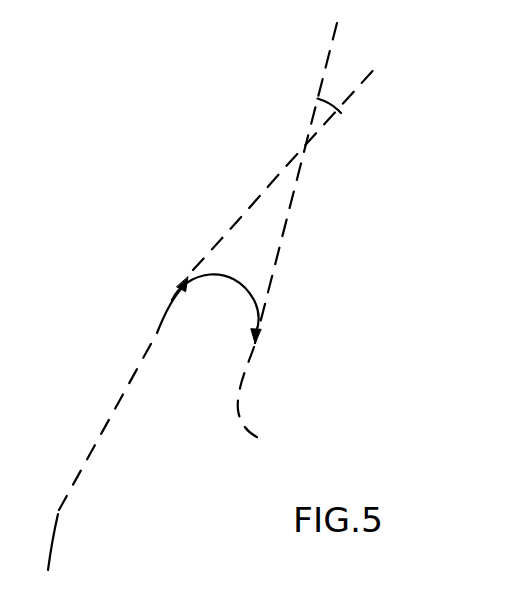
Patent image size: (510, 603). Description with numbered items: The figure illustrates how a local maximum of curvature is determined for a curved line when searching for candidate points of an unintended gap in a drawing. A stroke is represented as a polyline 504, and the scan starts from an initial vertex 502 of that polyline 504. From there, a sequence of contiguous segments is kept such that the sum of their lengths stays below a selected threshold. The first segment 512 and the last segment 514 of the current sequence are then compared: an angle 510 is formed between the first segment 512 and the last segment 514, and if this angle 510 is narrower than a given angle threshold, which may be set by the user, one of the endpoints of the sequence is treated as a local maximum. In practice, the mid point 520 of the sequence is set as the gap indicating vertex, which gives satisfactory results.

The initial vertex 502 is at (86, 542).
The polyline 504 is at (218, 287).
The angle 510 is at (362, 108).
The first segment 512 is at (187, 314).
The last segment 514 is at (287, 232).
The mid point 520 is at (221, 291).